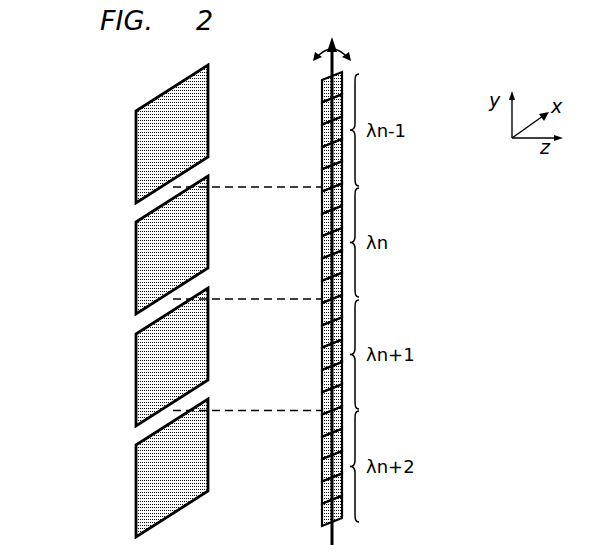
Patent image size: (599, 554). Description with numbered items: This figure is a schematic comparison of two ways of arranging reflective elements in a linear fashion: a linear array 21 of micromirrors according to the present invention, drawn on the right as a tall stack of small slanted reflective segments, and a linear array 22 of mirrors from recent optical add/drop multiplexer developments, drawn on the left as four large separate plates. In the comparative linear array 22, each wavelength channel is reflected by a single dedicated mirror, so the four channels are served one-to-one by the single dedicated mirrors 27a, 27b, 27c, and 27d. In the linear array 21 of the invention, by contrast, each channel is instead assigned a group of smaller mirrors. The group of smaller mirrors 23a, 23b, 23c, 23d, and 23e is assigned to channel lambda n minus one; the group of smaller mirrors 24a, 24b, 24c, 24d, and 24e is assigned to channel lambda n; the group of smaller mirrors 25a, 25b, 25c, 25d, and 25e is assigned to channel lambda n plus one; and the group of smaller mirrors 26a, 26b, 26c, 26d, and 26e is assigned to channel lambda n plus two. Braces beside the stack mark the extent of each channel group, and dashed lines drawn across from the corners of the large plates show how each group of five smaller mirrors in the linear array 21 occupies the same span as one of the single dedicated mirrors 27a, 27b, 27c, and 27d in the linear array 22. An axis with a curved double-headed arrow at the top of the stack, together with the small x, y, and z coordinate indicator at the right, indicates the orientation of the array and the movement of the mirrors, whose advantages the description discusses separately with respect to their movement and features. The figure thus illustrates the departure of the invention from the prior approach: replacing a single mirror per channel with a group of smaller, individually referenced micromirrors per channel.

The linear array 21 is at (381, 92).
The linear array of mirrors 22 is at (111, 96).
The smaller mirror 23a is at (321, 88).
The smaller mirror 23b is at (321, 111).
The smaller mirror 23c is at (321, 133).
The smaller mirror 23d is at (321, 156).
The smaller mirror 23e is at (321, 178).
The smaller mirror 24a is at (321, 201).
The smaller mirror 24b is at (321, 224).
The smaller mirror 24c is at (321, 246).
The smaller mirror 24d is at (321, 269).
The smaller mirror 24e is at (321, 291).
The smaller mirror 25a is at (321, 314).
The smaller mirror 25b is at (321, 337).
The smaller mirror 25c is at (321, 359).
The smaller mirror 25d is at (321, 382).
The smaller mirror 25e is at (321, 404).
The smaller mirror 26a is at (321, 427).
The smaller mirror 26b is at (321, 450).
The smaller mirror 26c is at (321, 472).
The smaller mirror 26d is at (321, 495).
The smaller mirror 26e is at (321, 517).
The single dedicated mirror 27a is at (135, 152).
The single dedicated mirror 27b is at (135, 263).
The single dedicated mirror 27c is at (135, 375).
The single dedicated mirror 27d is at (135, 486).